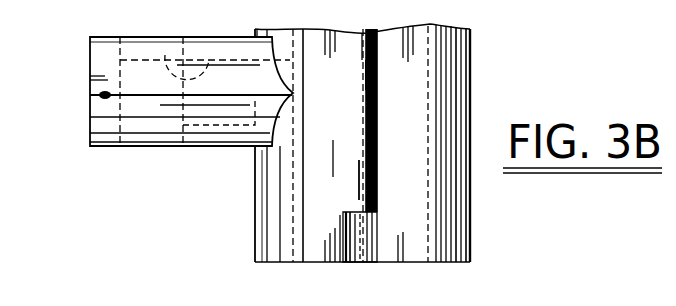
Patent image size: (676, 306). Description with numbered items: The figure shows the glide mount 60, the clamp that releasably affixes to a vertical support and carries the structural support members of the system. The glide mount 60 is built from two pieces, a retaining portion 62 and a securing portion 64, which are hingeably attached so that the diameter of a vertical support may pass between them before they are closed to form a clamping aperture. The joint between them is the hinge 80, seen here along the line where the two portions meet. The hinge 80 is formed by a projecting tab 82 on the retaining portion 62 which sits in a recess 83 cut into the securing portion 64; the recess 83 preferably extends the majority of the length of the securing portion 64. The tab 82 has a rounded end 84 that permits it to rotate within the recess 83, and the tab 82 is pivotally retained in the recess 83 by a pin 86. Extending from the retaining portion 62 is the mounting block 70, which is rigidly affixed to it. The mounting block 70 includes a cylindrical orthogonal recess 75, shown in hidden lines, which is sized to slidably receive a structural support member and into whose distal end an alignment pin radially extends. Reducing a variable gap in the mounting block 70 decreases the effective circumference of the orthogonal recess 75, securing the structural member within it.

The glide mount 60 is at (344, 165).
The retaining portion 62 is at (273, 210).
The securing portion 64 is at (458, 93).
The mounting block 70 is at (90, 36).
The orthogonal recess 75 is at (168, 56).
The hinge 80 is at (378, 203).
The projecting tab 82 is at (348, 124).
The recess 83 is at (378, 214).
The rounded end 84 is at (366, 72).
The pin 86 is at (360, 164).